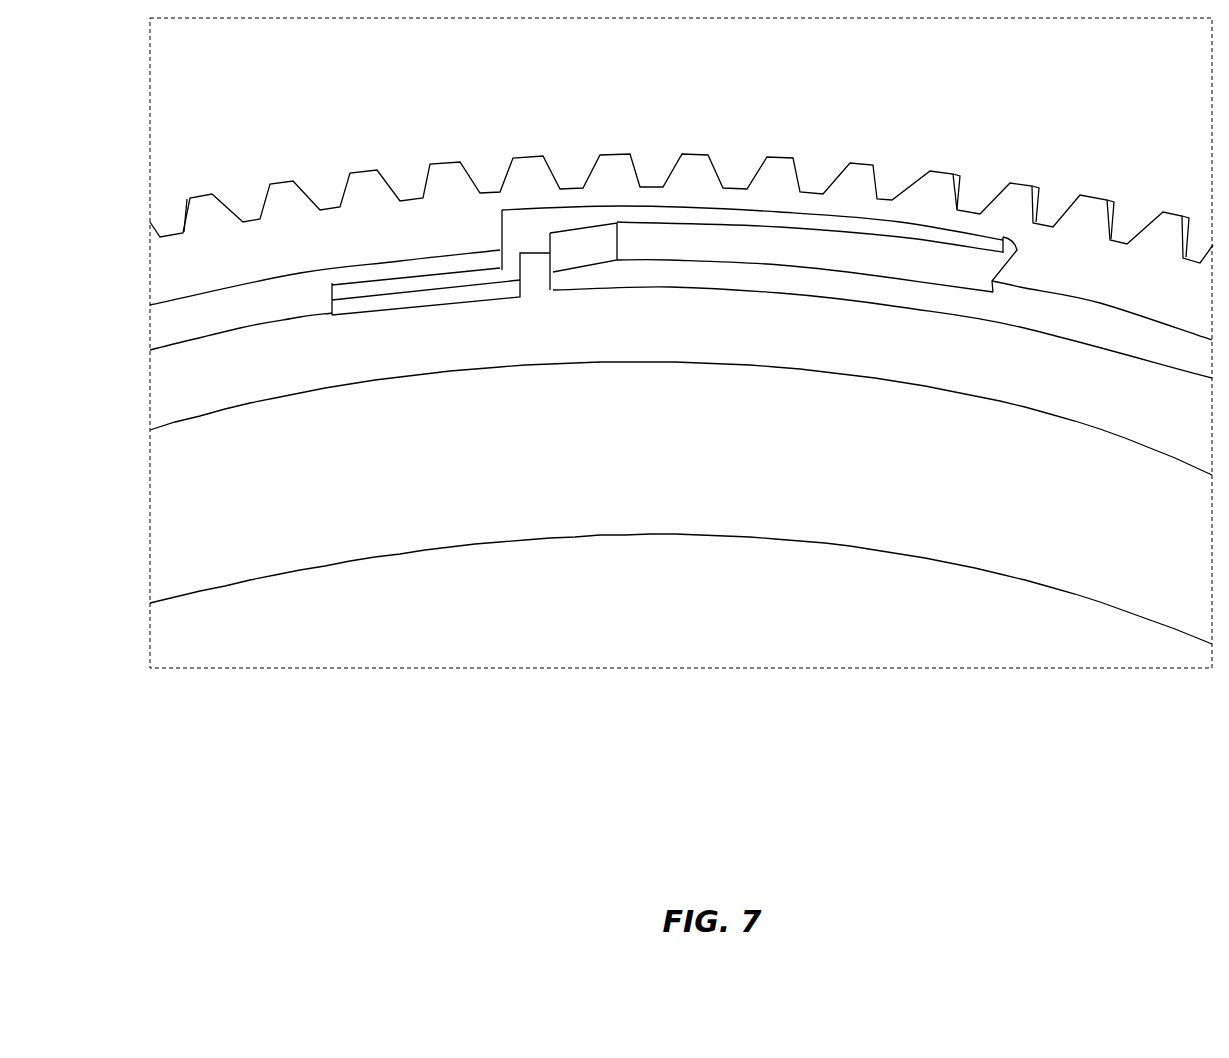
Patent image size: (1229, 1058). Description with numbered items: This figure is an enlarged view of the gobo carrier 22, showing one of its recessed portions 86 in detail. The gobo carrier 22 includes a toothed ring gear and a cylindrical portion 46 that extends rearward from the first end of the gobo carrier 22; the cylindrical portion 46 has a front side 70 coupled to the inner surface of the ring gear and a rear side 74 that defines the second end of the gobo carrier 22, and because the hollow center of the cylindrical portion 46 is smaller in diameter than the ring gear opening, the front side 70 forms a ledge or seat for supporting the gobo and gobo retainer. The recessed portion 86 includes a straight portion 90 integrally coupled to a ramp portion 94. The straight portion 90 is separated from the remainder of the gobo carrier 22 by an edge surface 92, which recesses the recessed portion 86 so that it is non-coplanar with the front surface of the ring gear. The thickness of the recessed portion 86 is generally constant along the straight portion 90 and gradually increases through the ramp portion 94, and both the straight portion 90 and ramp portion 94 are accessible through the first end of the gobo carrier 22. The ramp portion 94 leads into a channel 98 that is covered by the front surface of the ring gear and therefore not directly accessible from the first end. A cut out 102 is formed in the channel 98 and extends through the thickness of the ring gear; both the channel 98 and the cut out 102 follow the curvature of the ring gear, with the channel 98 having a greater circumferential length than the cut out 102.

The gobo carrier 22 is at (1083, 272).
The front side 70 is at (1045, 238).
The edge surface 92 is at (997, 278).
The recessed portion 86 is at (893, 245).
The straight portion 90 is at (732, 238).
The ramp portion 94 is at (578, 238).
The channel 98 is at (360, 290).
The cut out 102 is at (433, 298).
The cylindrical portion 46 is at (162, 498).
The rear side 74 is at (347, 558).